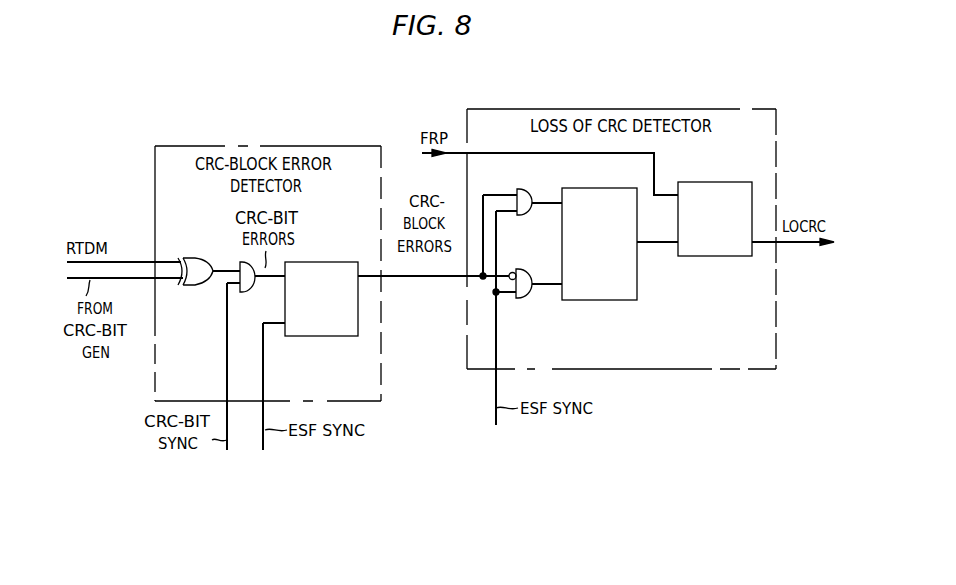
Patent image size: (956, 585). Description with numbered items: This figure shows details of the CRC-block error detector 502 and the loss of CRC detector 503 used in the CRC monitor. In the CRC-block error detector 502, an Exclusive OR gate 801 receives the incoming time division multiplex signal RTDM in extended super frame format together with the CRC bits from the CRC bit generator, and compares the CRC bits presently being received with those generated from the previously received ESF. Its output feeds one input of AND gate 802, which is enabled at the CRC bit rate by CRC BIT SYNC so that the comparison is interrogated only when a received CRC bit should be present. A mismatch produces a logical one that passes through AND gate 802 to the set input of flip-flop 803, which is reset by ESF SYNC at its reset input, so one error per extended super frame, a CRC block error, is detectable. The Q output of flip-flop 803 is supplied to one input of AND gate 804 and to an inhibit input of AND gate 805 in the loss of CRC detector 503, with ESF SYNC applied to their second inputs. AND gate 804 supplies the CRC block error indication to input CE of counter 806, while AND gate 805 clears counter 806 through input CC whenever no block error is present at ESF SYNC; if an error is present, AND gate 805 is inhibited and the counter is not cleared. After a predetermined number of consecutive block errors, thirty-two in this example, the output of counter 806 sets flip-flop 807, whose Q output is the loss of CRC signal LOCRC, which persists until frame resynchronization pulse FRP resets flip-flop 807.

The CRC-block error detector 502 is at (274, 146).
The loss of CRC detector 503 is at (685, 109).
The Exclusive OR gate 801 is at (196, 258).
The AND gate 802 is at (248, 292).
The flip-flop 803 is at (320, 336).
The AND gate 804 is at (522, 189).
The AND gate 805 is at (526, 269).
The counter 806 is at (592, 188).
The flip-flop 807 is at (702, 182).